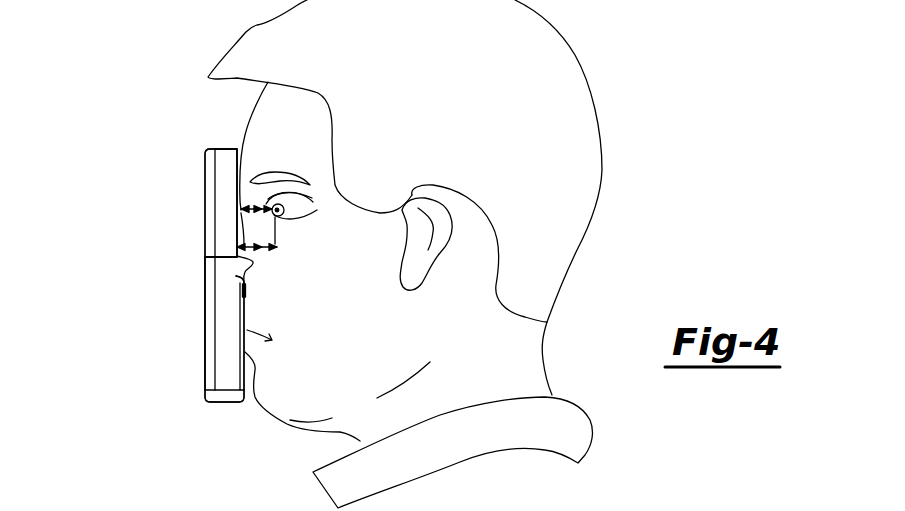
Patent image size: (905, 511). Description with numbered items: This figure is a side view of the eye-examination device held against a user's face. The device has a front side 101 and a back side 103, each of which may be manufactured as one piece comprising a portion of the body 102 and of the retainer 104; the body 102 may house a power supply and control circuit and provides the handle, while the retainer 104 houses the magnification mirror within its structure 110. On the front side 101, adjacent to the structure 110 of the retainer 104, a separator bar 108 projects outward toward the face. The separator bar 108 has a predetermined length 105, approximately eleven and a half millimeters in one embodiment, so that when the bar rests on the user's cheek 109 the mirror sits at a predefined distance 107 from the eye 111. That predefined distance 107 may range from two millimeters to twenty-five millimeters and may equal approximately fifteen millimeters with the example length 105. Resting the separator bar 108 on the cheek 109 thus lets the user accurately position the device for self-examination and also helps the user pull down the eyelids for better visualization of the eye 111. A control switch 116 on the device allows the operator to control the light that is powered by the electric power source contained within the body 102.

The front side 101 is at (228, 403).
The body 102 is at (156, 328).
The back side 103 is at (205, 318).
The retainer 104 is at (152, 203).
The length 105 is at (260, 257).
The predefined distance 107 is at (262, 206).
The separator bar 108 is at (237, 257).
The cheek 109 is at (282, 232).
The structure 110 is at (220, 179).
The eye 111 is at (281, 209).
The control switch 116 is at (242, 290).